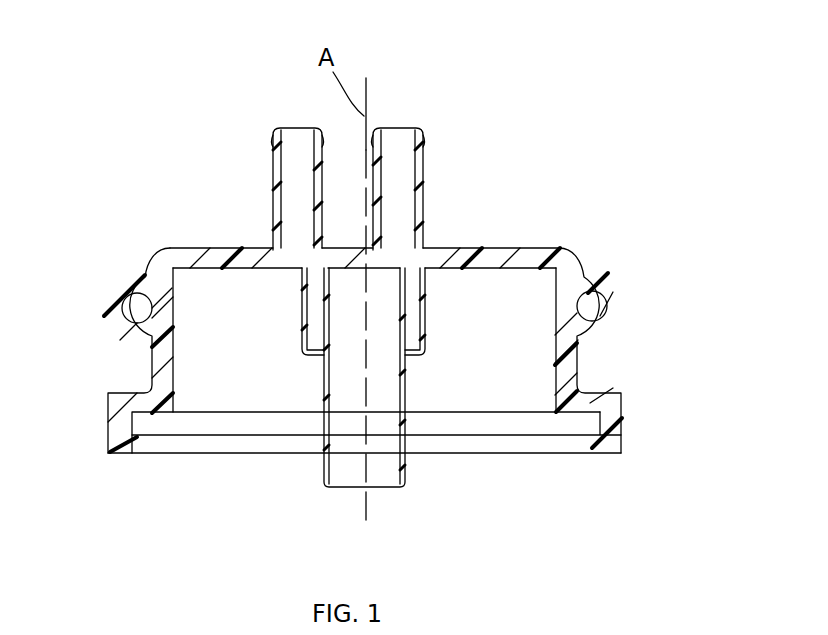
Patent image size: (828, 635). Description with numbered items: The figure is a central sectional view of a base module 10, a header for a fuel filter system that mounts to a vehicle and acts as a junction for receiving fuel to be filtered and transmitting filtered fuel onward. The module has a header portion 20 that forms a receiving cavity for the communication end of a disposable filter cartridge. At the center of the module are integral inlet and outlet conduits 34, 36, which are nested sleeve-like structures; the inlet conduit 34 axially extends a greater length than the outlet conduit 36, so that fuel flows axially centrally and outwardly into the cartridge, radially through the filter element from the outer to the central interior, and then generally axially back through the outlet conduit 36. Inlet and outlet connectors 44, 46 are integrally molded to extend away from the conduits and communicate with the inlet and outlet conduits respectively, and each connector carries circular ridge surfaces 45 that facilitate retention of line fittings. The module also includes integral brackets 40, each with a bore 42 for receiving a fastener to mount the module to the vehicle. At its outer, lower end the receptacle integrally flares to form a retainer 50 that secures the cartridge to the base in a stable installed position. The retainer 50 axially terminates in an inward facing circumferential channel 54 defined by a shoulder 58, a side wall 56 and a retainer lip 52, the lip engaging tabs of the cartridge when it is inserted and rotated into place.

The base module 10 is at (112, 204).
The header portion 20 is at (222, 247).
The inlet conduit 34 is at (407, 466).
The outlet conduit 36 is at (427, 326).
The bracket 40 is at (107, 330).
The bore 42 is at (124, 302).
The inlet connector 44 is at (424, 190).
The circular ridge surfaces 45 is at (274, 136).
The outlet connector 46 is at (272, 165).
The retainer 50 is at (110, 430).
The retainer lip 52 is at (137, 453).
The circumferential channel 54 is at (590, 420).
The side wall 56 is at (140, 437).
The shoulder 58 is at (143, 437).